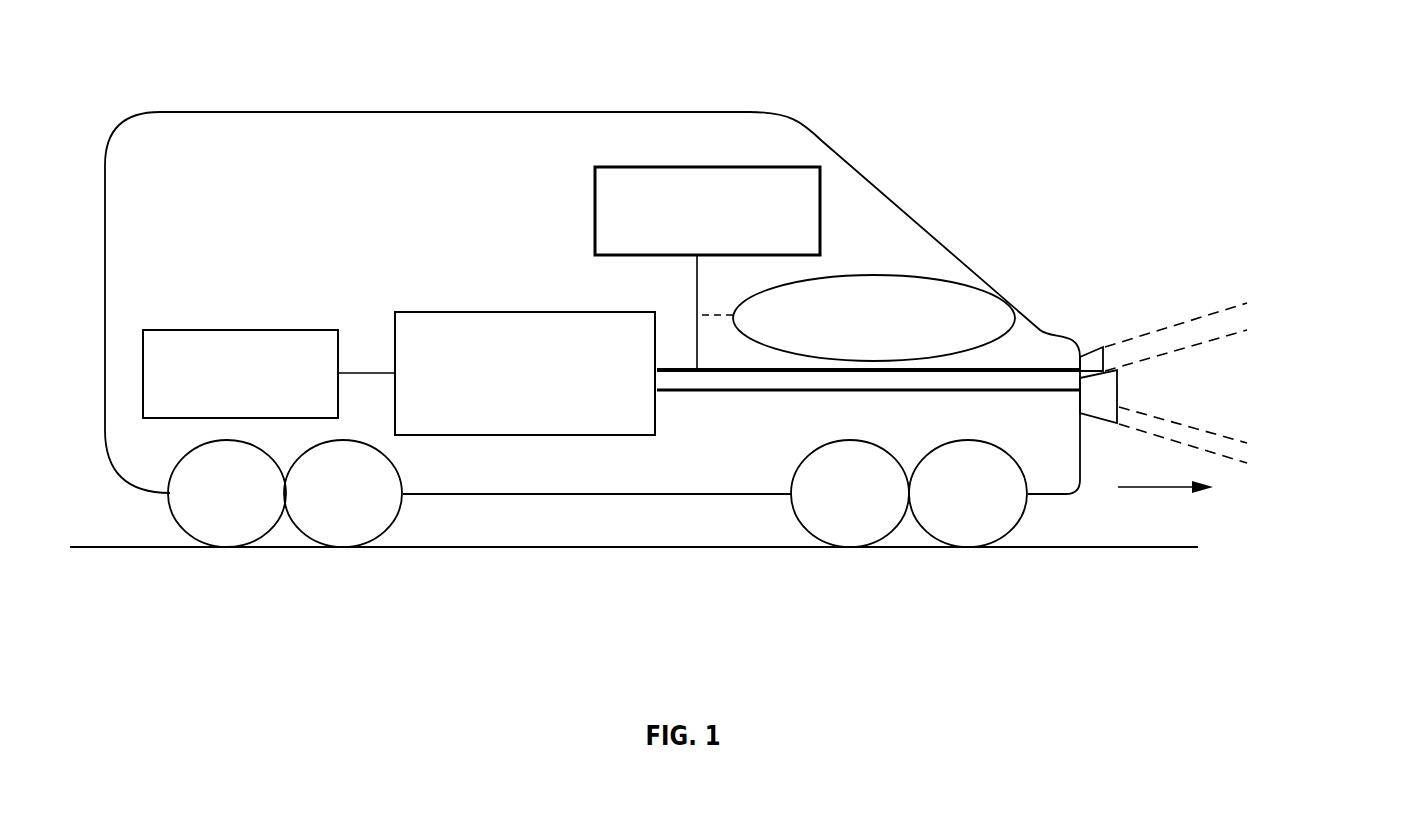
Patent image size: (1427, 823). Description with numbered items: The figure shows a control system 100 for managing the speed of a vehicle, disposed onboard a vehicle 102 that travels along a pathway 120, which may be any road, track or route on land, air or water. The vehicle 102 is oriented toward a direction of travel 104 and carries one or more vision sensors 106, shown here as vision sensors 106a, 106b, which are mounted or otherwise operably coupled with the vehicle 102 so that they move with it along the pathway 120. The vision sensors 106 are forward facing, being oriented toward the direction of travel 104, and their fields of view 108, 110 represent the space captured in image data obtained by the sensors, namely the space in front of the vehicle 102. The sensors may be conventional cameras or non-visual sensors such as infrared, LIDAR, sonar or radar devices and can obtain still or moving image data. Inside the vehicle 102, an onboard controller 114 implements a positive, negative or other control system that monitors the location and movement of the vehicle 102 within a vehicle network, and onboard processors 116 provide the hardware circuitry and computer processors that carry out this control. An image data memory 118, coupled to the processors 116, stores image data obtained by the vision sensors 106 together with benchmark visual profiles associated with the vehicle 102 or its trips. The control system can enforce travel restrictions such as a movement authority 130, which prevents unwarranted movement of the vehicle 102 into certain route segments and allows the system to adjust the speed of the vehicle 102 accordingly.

The control system 100 is at (278, 97).
The vehicle 102 is at (846, 160).
The direction of travel 104 is at (1172, 488).
The vision sensors 106 is at (1123, 389).
The vision sensor 106a is at (1094, 414).
The vision sensor 106b is at (1103, 350).
The field of view 108 is at (1262, 330).
The field of view 110 is at (1262, 303).
The onboard controller 114 is at (595, 190).
The onboard processors 116 is at (490, 309).
The image data memory 118 is at (242, 328).
The pathway 120 is at (1172, 550).
The movement authority 130 is at (920, 277).